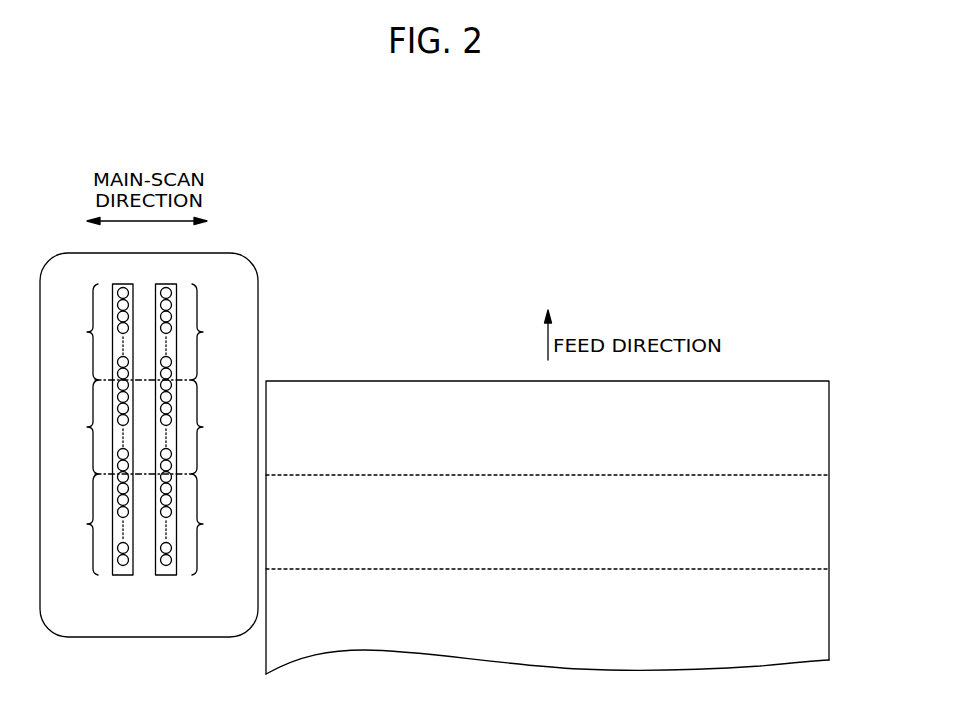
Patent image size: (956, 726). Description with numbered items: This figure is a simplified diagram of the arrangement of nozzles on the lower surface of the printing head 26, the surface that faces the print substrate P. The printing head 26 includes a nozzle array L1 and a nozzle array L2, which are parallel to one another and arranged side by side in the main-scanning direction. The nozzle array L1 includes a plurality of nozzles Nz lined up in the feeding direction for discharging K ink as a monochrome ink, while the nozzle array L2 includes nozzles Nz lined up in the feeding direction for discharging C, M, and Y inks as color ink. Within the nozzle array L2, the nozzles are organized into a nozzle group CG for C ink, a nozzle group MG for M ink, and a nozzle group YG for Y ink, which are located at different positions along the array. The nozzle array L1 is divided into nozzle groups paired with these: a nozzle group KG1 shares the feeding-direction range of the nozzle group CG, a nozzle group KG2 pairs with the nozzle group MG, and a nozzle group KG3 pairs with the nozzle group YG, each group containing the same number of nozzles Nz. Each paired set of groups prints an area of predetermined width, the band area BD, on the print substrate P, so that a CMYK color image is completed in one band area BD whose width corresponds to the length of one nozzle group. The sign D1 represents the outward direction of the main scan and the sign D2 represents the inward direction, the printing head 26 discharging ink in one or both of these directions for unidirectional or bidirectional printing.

The printing head 26 is at (259, 281).
The print substrate P is at (392, 381).
The nozzle Nz is at (118, 284).
The nozzle array L1 is at (167, 582).
The nozzle array L2 is at (123, 582).
The nozzle group YG is at (76, 332).
The nozzle group MG is at (75, 427).
The nozzle group CG is at (76, 524).
The nozzle group KG1 is at (216, 524).
The nozzle group KG2 is at (217, 427).
The nozzle group KG3 is at (217, 332).
The band area BD is at (547, 522).
The outward direction D1 is at (214, 223).
The inward direction D2 is at (130, 223).